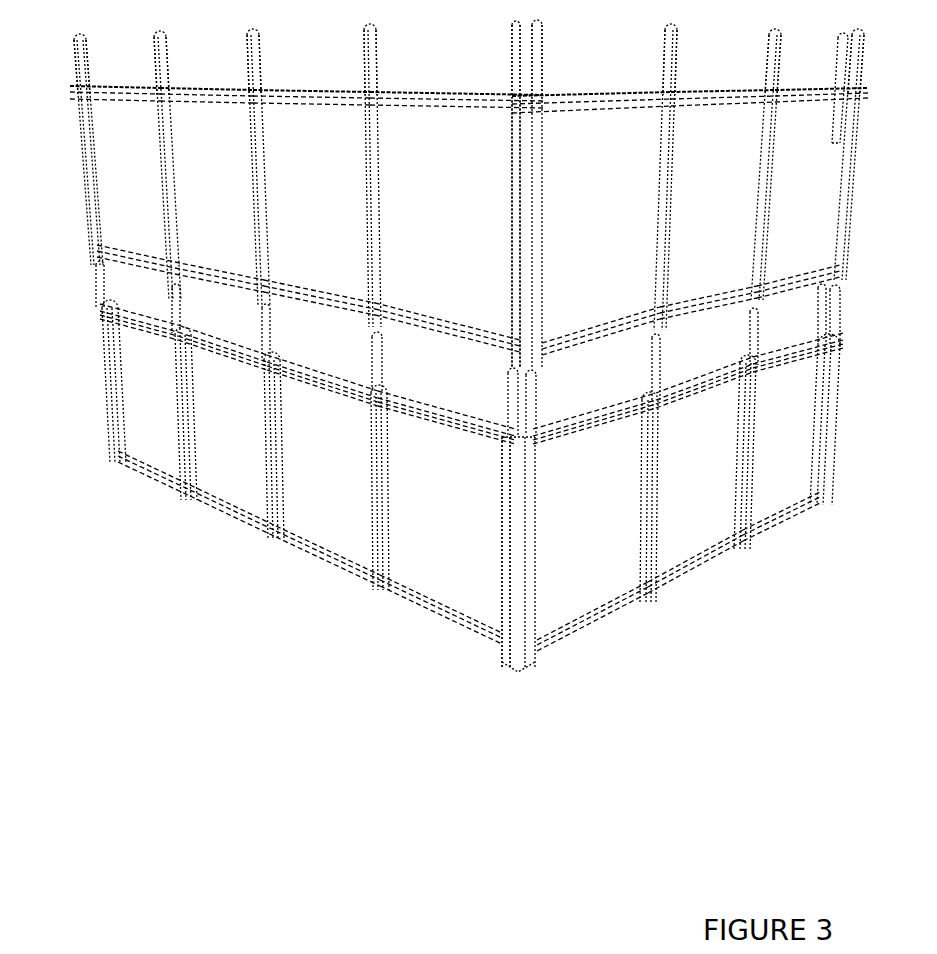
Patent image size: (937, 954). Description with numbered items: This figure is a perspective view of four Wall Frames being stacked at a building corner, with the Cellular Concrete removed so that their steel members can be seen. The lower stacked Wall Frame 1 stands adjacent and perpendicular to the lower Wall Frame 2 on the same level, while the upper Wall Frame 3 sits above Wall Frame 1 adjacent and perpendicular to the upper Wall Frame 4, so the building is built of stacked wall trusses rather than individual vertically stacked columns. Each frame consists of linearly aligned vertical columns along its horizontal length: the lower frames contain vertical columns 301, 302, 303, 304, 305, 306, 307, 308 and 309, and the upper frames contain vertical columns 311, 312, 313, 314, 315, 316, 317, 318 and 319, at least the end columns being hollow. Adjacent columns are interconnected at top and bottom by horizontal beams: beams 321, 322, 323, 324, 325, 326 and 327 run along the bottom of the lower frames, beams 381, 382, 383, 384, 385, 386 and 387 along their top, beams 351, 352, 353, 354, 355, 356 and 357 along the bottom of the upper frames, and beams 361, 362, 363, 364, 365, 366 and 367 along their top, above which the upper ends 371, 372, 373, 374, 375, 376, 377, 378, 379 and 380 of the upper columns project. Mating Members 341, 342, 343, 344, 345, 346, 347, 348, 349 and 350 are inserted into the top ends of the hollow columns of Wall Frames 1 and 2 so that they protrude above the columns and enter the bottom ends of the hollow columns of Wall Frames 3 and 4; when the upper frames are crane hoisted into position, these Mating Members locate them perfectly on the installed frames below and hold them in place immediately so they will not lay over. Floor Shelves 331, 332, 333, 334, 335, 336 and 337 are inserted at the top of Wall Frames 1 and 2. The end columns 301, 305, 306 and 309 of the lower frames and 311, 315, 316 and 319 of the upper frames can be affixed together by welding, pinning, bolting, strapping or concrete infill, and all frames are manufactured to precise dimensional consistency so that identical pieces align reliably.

The Wall Frame 1 is at (82, 445).
The Wall Frame 2 is at (863, 445).
The Wall Frame 3 is at (52, 142).
The Wall Frame 4 is at (886, 139).
The end Wall Frame Column 301 is at (108, 395).
The vertical column 302 is at (193, 420).
The vertical column 303 is at (280, 450).
The vertical column 304 is at (390, 484).
The end Wall Frame Column 305 is at (501, 536).
The end Wall Frame Column 306 is at (537, 530).
The vertical column 307 is at (660, 485).
The vertical column 308 is at (753, 445).
The end Wall Frame Column 309 is at (812, 465).
The end Wall Frame Column 311 is at (88, 178).
The vertical column 312 is at (182, 178).
The vertical column 313 is at (271, 188).
The vertical column 314 is at (382, 196).
The end Wall Frame Column 315 is at (510, 206).
The end Wall Frame Column 316 is at (545, 206).
The vertical column 317 is at (671, 190).
The vertical column 318 is at (770, 188).
The end Wall Frame Column 319 is at (853, 182).
The horizontal beam 321 is at (152, 475).
The horizontal beam 322 is at (240, 518).
The horizontal beam 323 is at (345, 573).
The horizontal beam 324 is at (470, 633).
The horizontal beam 325 is at (572, 630).
The horizontal beam 326 is at (680, 575).
The horizontal beam 327 is at (766, 528).
The Floor Shelf 331 is at (120, 312).
The Floor Shelf 332 is at (205, 340).
The Floor Shelf 333 is at (292, 367).
The Floor Shelf 334 is at (410, 400).
The Floor Shelf 335 is at (617, 402).
The Floor Shelf 336 is at (723, 365).
The Floor Shelf 337 is at (808, 348).
The Mating Member 341 is at (95, 289).
The Mating Member 342 is at (182, 303).
The Mating Member 343 is at (272, 328).
The Mating Member 344 is at (384, 358).
The Mating Member 345 is at (508, 400).
The Mating Member 346 is at (537, 404).
The Mating Member 347 is at (662, 342).
The Mating Member 348 is at (760, 316).
The Mating Member 349 is at (816, 300).
The Mating Member 350 is at (841, 310).
The horizontal beam 351 is at (112, 247).
The horizontal beam 352 is at (203, 265).
The horizontal beam 353 is at (288, 287).
The horizontal beam 354 is at (407, 314).
The horizontal beam 355 is at (620, 322).
The horizontal beam 356 is at (727, 295).
The horizontal beam 357 is at (818, 272).
The horizontal beam 361 is at (108, 98).
The horizontal beam 362 is at (193, 99).
The horizontal beam 363 is at (290, 103).
The horizontal beam 364 is at (402, 107).
The horizontal beam 365 is at (628, 112).
The horizontal beam 366 is at (740, 105).
The horizontal beam 367 is at (825, 102).
The upper post top end 371 is at (77, 69).
The upper post top end 372 is at (158, 69).
The upper post top end 373 is at (250, 69).
The upper post top end 374 is at (367, 73).
The upper post top end 375 is at (512, 76).
The upper post top end 376 is at (542, 72).
The upper post top end 377 is at (664, 67).
The upper post top end 378 is at (769, 58).
The upper post top end 379 is at (838, 56).
The upper post top end 380 is at (864, 55).
The horizontal beam 381 is at (153, 336).
The horizontal beam 382 is at (248, 363).
The horizontal beam 383 is at (347, 397).
The horizontal beam 384 is at (465, 434).
The horizontal beam 385 is at (567, 442).
The horizontal beam 386 is at (677, 402).
The horizontal beam 387 is at (768, 368).